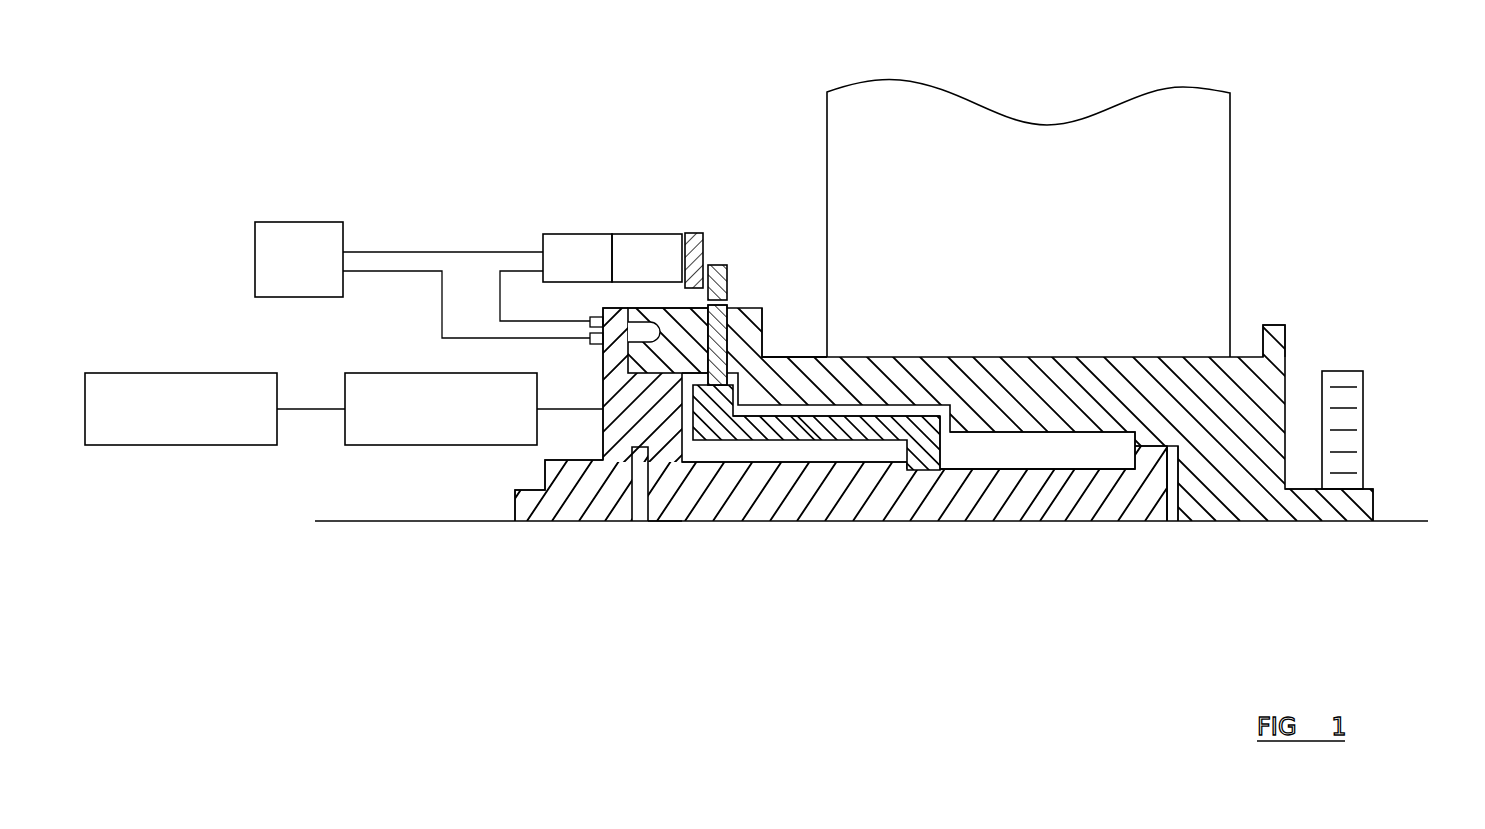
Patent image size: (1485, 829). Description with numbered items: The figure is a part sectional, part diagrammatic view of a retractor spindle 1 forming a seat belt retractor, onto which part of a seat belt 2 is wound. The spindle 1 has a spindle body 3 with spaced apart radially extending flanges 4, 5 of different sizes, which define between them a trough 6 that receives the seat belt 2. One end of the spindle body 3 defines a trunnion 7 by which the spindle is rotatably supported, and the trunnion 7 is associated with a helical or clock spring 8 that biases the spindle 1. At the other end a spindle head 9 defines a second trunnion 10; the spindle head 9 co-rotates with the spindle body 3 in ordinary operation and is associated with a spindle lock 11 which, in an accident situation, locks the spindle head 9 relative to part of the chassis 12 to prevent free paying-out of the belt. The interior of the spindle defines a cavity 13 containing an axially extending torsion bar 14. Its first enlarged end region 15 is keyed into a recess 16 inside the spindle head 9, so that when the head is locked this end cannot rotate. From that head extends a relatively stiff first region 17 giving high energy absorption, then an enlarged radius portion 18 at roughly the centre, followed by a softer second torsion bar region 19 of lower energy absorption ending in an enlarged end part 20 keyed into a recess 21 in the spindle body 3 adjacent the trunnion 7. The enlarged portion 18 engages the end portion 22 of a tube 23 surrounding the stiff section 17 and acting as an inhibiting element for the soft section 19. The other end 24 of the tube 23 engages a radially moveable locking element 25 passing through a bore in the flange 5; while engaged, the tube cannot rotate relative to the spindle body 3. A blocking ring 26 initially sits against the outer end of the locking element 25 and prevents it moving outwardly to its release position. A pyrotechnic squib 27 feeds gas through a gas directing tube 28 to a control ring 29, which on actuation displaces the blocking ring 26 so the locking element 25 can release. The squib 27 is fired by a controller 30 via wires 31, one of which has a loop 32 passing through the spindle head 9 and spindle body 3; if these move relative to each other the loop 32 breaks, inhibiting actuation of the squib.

The spindle 1 is at (1343, 205).
The seat belt 2 is at (1177, 195).
The spindle body 3 is at (1260, 395).
The flange 4 is at (1275, 325).
The flange 5 is at (788, 340).
The trough 6 is at (798, 347).
The trunnion 7 is at (1343, 507).
The clock spring 8 is at (1364, 424).
The spindle head 9 is at (608, 497).
The second trunnion 10 is at (528, 512).
The spindle lock 11 is at (445, 437).
The chassis 12 is at (193, 435).
The cavity 13 is at (1057, 455).
The torsion bar 14 is at (857, 507).
The first enlarged end region 15 is at (665, 510).
The recess 16 is at (642, 512).
The first region 17 is at (793, 500).
The enlarged radius portion 18 is at (925, 498).
The second torsion bar region 19 is at (1003, 497).
The enlarged end part 20 is at (1150, 497).
The recess 21 is at (1175, 500).
The end portion 22 is at (921, 420).
The tube 23 is at (857, 414).
The other end 24 is at (693, 408).
The locking element 25 is at (745, 307).
The blocking ring 26 is at (720, 267).
The pyrotechnic squib 27 is at (560, 233).
The gas directing tube 28 is at (650, 233).
The control ring 29 is at (694, 262).
The controller 30 is at (302, 228).
The wires 31 is at (410, 252).
The loop 32 is at (653, 307).